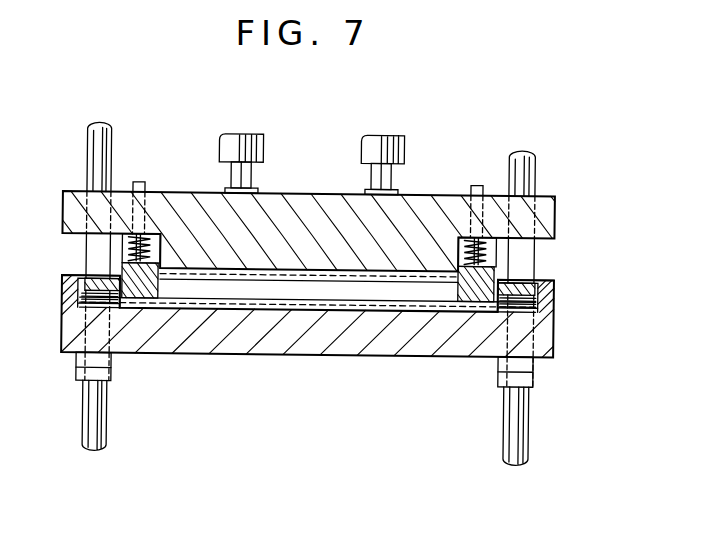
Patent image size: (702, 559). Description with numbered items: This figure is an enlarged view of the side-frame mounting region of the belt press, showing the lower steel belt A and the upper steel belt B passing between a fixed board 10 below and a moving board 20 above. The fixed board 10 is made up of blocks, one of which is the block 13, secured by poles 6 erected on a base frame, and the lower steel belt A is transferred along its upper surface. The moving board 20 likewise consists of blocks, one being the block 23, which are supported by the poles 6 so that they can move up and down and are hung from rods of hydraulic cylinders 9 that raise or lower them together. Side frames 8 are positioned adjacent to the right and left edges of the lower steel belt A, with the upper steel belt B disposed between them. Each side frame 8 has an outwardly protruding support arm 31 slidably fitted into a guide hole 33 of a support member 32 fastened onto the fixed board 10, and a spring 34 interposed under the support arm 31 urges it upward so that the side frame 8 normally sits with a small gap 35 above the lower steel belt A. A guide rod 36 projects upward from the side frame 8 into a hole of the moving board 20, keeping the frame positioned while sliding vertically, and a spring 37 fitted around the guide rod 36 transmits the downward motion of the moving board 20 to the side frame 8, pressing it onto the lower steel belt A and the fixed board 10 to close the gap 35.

The pole 6 is at (110, 436).
The side frame 8 is at (148, 286).
The hydraulic cylinder 9 is at (243, 132).
The fixed board 10 is at (300, 357).
The block 13 is at (385, 352).
The moving board 20 is at (307, 192).
The block 23 is at (427, 201).
The support arm 31 is at (96, 281).
The support member 32 is at (72, 285).
The guide hole 33 is at (80, 298).
The spring 34 is at (86, 305).
The gap 35 is at (138, 306).
The guide rod 36 is at (138, 181).
The spring 37 is at (149, 252).
The lower steel belt A is at (296, 302).
The upper steel belt B is at (247, 269).